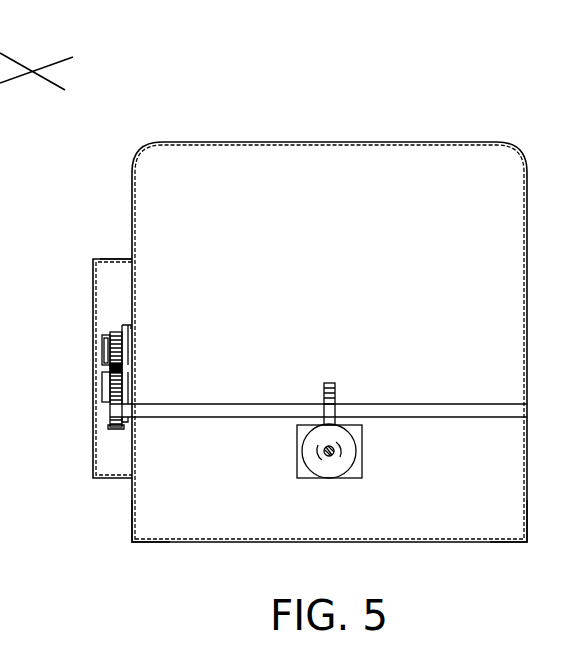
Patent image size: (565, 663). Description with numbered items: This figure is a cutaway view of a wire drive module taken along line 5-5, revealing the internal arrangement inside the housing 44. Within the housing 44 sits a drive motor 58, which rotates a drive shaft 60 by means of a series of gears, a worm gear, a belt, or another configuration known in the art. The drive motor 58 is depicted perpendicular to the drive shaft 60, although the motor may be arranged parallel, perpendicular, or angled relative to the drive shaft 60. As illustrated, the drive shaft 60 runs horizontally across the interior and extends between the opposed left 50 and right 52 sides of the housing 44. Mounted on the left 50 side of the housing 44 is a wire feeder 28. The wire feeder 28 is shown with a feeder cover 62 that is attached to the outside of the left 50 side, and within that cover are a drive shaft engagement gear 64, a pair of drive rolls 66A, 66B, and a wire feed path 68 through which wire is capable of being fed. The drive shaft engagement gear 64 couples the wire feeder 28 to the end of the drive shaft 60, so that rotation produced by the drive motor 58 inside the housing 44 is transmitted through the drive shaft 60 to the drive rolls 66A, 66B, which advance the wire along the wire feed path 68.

The line 5- 5 is at (37, 71).
The wire feeder 28 is at (115, 262).
The housing 44 is at (422, 142).
The left side 50 is at (130, 517).
The right side 52 is at (527, 517).
The drive motor 58 is at (362, 467).
The drive shaft 60 is at (418, 408).
The feeder cover 62 is at (92, 262).
The drive shaft engagement gear 64 is at (112, 426).
The drive roll 66A is at (107, 334).
The drive roll 66B is at (108, 408).
The wire feed path 68 is at (108, 367).